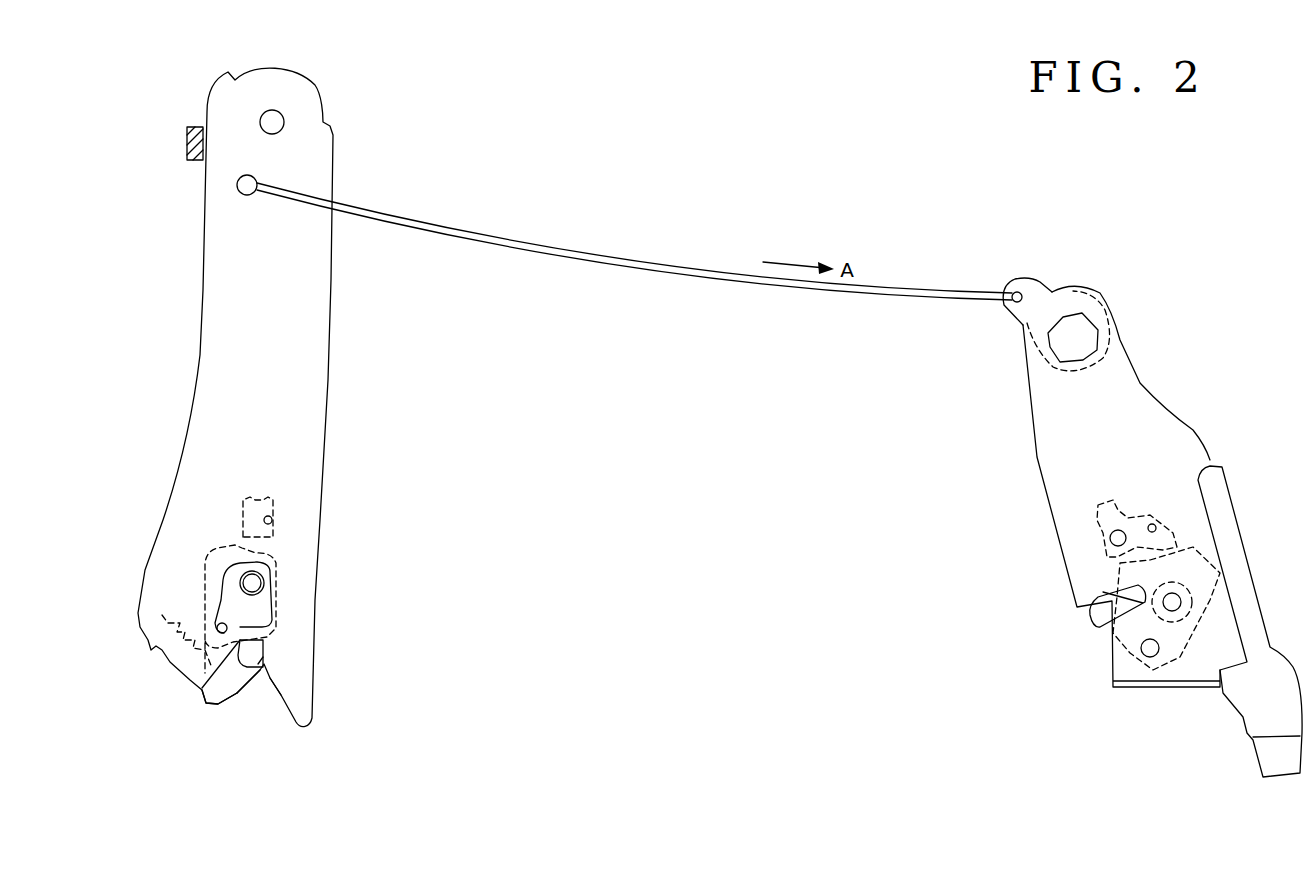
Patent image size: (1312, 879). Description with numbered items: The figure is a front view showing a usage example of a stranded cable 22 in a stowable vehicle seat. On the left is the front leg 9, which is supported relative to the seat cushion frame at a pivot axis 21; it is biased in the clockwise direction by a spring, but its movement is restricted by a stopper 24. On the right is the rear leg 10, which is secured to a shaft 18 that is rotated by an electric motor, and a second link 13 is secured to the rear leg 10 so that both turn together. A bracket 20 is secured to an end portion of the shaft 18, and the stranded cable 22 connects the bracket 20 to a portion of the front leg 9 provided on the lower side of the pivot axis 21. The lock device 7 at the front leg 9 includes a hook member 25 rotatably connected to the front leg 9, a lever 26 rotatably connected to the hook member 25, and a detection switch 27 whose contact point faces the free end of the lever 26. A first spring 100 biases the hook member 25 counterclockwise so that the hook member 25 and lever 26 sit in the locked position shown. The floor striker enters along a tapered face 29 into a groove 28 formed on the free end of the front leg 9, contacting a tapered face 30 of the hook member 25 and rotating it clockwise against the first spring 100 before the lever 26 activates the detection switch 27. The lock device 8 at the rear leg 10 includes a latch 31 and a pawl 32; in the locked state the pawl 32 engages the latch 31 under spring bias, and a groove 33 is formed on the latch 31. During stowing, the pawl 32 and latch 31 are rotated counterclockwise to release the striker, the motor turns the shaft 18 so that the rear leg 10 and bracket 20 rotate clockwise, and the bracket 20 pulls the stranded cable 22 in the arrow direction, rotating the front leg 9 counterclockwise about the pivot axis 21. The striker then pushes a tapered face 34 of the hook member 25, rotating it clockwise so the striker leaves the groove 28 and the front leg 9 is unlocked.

The front leg 9 is at (330, 376).
The rear leg 10 is at (1022, 440).
The pivot axis 21 is at (283, 117).
The stopper 24 is at (192, 161).
The stranded cable 22 is at (687, 278).
The bracket 20 is at (1031, 280).
The shaft 18 is at (1097, 330).
The second link 13 is at (1262, 762).
The pawl 32 is at (1120, 510).
The lock device 8 is at (1100, 569).
The latch 31 is at (1113, 645).
The groove 33 is at (1123, 607).
The lever 26 is at (200, 564).
The lock device 7 is at (295, 594).
The detection switch 27 is at (274, 520).
The groove 28 is at (256, 653).
The tapered face 34 is at (258, 662).
The first spring 100 is at (162, 617).
The hook member 25 is at (224, 712).
The tapered face 30 is at (247, 690).
The tapered face 29 is at (282, 712).